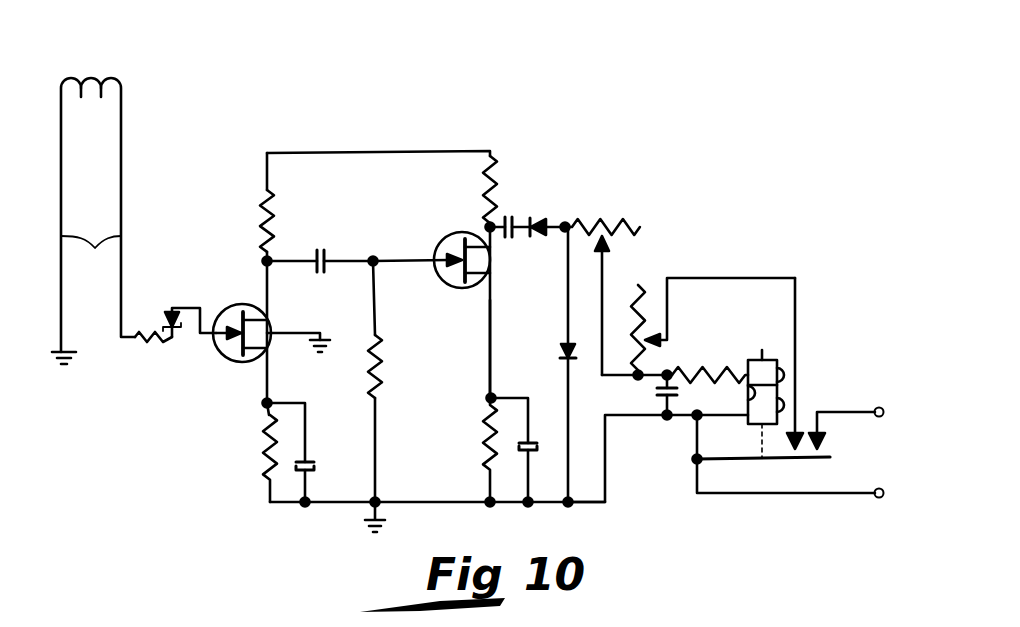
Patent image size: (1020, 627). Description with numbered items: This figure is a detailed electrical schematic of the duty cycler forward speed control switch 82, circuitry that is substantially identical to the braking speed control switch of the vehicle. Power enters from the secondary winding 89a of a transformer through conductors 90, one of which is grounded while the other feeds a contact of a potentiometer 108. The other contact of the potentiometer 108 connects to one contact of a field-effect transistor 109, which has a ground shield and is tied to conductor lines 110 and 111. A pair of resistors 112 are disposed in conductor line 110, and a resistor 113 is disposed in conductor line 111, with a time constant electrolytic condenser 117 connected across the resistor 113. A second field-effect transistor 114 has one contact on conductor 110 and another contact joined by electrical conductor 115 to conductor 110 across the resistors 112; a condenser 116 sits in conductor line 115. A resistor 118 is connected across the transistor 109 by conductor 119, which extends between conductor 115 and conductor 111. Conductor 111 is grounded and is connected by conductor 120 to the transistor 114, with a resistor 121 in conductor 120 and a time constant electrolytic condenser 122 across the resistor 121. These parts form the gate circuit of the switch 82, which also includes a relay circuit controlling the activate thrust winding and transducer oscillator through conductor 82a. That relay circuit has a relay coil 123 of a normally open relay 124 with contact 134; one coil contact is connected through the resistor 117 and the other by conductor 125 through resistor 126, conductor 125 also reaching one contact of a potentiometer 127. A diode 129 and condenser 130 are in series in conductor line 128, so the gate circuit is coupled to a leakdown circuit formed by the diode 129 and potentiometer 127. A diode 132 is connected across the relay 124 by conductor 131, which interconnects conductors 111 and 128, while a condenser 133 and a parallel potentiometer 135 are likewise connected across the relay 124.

The duty cycler forward speed control switch 82 is at (378, 104).
The conductor 82a is at (854, 412).
The secondary winding 89a is at (105, 49).
The conductors 90 is at (91, 256).
The potentiometer 108 is at (164, 342).
The field-effect transistor 109 is at (237, 312).
The conductor line 110 is at (263, 182).
The conductor line 111 is at (265, 384).
The resistors 112 is at (263, 227).
The resistor 113 is at (262, 438).
The field-effect transistor 114 is at (441, 278).
The electrical conductor 115 is at (413, 258).
The condenser 116 is at (332, 240).
The time constant electrolytic condenser 117 is at (310, 462).
The resistor 118 is at (379, 350).
The conductor 119 is at (378, 428).
The conductor 120 is at (488, 326).
The resistor 121 is at (488, 452).
The time constant electrolytic condenser 122 is at (534, 443).
The relay coil 123 is at (758, 393).
The relay 124 is at (798, 388).
The conductor 125 is at (606, 258).
The resistor 126 is at (707, 353).
The potentiometer 127 is at (625, 218).
The conductor line 128 is at (562, 209).
The diode 129 is at (533, 222).
The condenser 130 is at (512, 240).
The conductor 131 is at (570, 405).
The diode 132 is at (566, 343).
The condenser 133 is at (678, 390).
The relay contact 134 is at (820, 468).
The potentiometer 135 is at (640, 284).